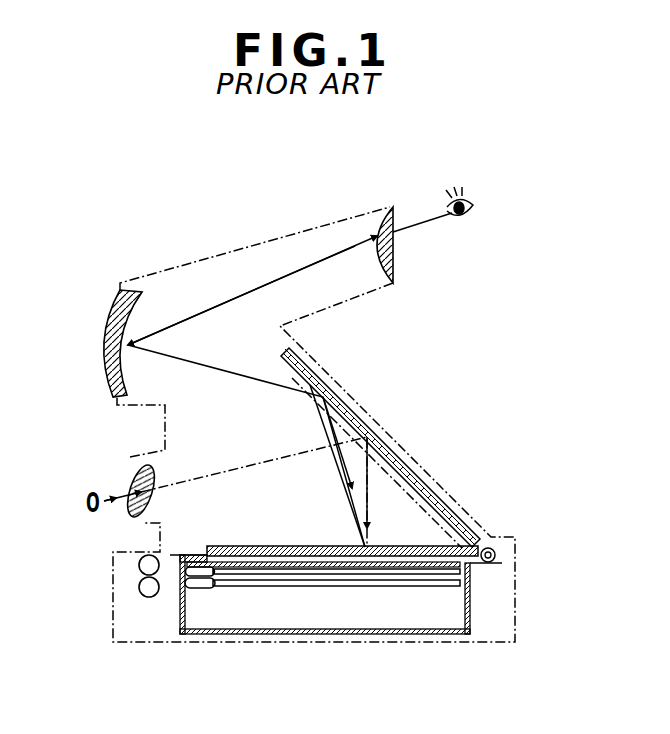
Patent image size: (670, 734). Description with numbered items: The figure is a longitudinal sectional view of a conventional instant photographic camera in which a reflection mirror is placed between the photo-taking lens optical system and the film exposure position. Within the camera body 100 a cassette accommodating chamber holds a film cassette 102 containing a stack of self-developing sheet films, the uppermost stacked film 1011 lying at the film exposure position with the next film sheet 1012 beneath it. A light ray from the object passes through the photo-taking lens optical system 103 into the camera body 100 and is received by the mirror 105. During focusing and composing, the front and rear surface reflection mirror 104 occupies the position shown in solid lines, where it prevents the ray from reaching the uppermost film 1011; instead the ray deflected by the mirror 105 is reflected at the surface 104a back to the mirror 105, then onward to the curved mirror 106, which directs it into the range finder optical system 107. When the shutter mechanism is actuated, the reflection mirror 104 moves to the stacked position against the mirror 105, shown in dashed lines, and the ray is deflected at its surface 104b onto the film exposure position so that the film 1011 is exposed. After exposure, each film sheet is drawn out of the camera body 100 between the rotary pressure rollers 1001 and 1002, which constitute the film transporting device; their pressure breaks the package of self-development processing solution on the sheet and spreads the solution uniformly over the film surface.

The camera body 100 is at (148, 630).
The rotary pressure roller 1001 is at (139, 588).
The rotary pressure roller 1002 is at (139, 565).
The uppermost stacked film 1011 is at (430, 587).
The stacked film sheet 1012 is at (363, 575).
The film cassette 102 is at (470, 608).
The photo-taking lens optical system 103 is at (128, 507).
The front and rear surface reflection mirror 104 is at (324, 549).
The front surface of reflection mirror 104a is at (243, 545).
The rear surface of reflection mirror 104b is at (310, 567).
The mirror 105 is at (396, 453).
The curved mirror 106 is at (115, 318).
The range finder optical system 107 is at (383, 218).